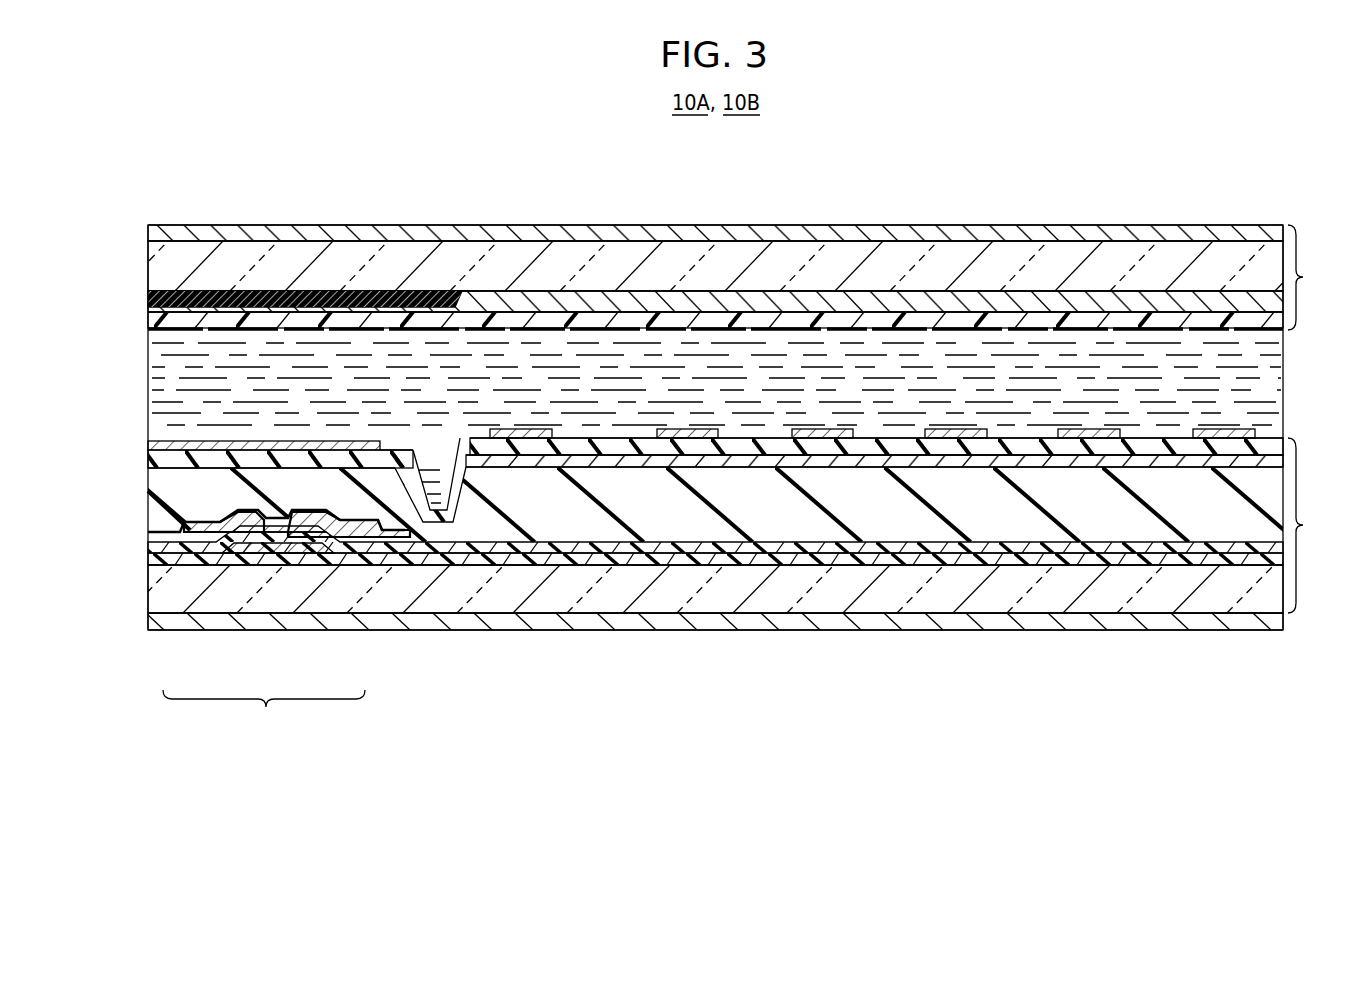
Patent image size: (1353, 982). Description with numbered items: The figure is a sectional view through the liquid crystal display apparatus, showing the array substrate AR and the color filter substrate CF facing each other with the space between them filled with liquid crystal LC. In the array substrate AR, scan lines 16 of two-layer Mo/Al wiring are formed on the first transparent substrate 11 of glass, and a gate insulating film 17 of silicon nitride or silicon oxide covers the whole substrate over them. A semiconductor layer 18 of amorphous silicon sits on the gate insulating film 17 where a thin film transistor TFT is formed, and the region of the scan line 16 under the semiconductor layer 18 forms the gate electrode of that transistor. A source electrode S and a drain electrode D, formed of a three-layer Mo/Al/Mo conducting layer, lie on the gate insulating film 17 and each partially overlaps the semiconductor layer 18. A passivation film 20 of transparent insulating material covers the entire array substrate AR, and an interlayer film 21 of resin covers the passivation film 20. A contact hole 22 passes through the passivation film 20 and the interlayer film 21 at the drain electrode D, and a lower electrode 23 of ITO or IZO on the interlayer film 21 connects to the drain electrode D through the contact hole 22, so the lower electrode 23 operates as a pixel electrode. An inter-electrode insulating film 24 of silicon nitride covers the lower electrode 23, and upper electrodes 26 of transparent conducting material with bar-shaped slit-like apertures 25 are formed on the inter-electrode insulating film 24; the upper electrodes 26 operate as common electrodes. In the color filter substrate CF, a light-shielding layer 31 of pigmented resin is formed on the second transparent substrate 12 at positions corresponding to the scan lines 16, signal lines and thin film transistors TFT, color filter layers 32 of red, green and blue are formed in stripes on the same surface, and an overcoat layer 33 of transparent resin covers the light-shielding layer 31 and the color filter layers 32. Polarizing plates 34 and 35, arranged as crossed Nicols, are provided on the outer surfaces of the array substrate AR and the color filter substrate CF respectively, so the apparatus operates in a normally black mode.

The first transparent substrate 11 is at (452, 597).
The second transparent substrate 12 is at (1072, 262).
The scan line 16 is at (272, 556).
The gate insulating film 17 is at (740, 550).
The semiconductor layer 18 is at (236, 534).
The passivation film 20 is at (1020, 558).
The interlayer film 21 is at (152, 496).
The contact hole 22 is at (412, 486).
The lower electrode 23 is at (655, 470).
The inter-electrode insulating film 24 is at (948, 448).
The slit-like aperture 25 is at (720, 433).
The upper electrode 26 is at (523, 439).
The light-shielding layer 31 is at (312, 297).
The color filter layer 32 is at (846, 300).
The overcoat layer 33 is at (680, 320).
The polarizing plate 34 is at (875, 621).
The polarizing plate 35 is at (552, 233).
The source electrode S is at (176, 555).
The drain electrode D is at (352, 532).
The thin film transistor TFT is at (264, 712).
The color filter substrate CF is at (1313, 277).
The array substrate AR is at (1314, 525).
The liquid crystal LC is at (1275, 351).